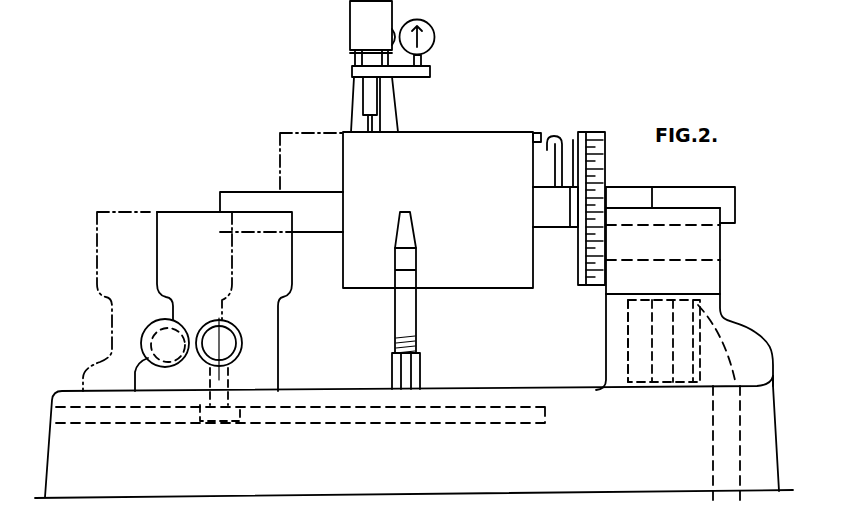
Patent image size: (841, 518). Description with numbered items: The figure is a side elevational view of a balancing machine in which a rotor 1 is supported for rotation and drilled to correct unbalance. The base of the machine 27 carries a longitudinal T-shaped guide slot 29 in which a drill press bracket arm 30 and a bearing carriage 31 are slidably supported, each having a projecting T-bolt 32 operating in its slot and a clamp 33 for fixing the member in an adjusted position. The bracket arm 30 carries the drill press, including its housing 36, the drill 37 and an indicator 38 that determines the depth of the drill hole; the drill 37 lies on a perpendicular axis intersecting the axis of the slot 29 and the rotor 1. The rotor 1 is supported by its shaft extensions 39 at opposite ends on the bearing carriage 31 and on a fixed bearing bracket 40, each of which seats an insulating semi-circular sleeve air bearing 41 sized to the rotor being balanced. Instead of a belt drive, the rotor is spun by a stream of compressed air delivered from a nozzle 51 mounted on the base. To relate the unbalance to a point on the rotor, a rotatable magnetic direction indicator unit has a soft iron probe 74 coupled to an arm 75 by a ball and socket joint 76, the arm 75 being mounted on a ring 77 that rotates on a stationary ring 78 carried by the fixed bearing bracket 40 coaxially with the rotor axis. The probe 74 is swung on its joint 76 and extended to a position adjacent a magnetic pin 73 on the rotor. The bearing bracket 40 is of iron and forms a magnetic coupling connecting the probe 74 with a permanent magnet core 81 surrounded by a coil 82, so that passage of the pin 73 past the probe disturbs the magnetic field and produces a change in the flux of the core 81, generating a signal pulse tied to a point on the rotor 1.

The rotor 1 is at (507, 132).
The base of the machine 27 is at (676, 484).
The guide slot 29 is at (304, 423).
The drill press bracket arm 30 is at (400, 118).
The bearing carriage 31 is at (172, 222).
The T-bolt 32 is at (226, 423).
The clamp 33 is at (241, 352).
The housing 36 is at (370, 98).
The drill 37 is at (360, 128).
The indicator 38 is at (435, 39).
The shaft extensions 39 is at (242, 200).
The fixed bearing bracket 40 is at (708, 283).
The air bearing 41 is at (693, 254).
The nozzle 51 is at (420, 328).
The magnetic pin 73 is at (537, 133).
The soft iron probe 74 is at (563, 143).
The arm 75 is at (581, 133).
The ball and socket joint 76 is at (120, 508).
The ring 77 is at (600, 133).
The stationary ring 78 is at (606, 167).
The permanent magnet core 81 is at (652, 337).
The coil 82 is at (636, 318).